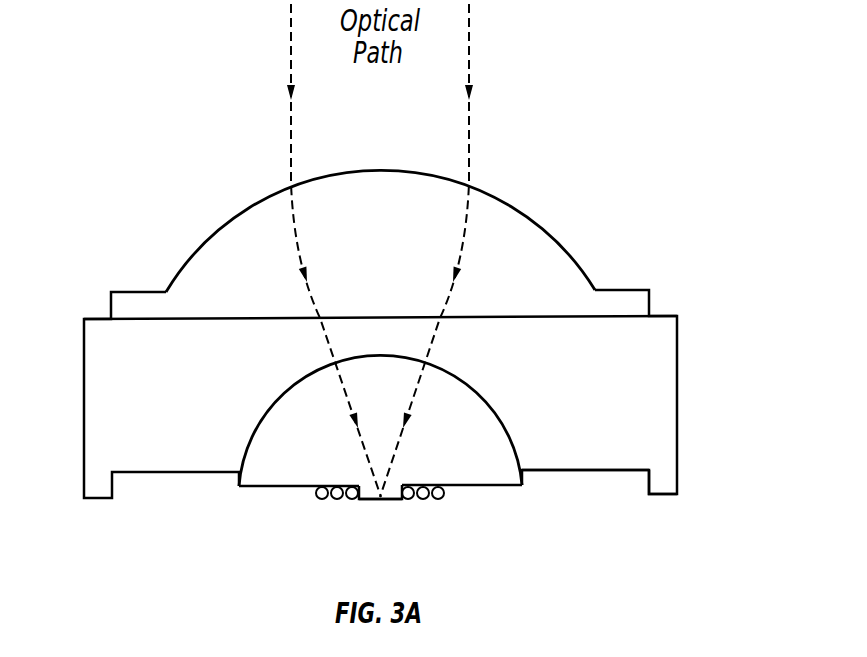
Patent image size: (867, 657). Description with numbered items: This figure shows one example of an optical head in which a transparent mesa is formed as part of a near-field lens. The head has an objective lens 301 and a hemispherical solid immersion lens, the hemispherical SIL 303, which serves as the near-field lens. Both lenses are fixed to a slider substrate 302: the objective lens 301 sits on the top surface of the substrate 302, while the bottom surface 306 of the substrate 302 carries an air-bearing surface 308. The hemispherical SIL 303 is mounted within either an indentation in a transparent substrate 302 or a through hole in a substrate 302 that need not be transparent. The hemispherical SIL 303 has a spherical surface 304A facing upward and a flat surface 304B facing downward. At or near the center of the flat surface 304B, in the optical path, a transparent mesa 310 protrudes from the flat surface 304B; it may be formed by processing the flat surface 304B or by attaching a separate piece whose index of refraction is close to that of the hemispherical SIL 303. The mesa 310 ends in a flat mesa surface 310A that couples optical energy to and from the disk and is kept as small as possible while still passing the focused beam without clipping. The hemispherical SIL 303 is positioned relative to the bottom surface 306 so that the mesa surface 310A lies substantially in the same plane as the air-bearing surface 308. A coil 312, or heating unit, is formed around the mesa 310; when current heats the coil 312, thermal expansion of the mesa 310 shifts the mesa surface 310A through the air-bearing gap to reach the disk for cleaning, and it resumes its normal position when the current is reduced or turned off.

The objective lens 301 is at (399, 257).
The slider substrate 302 is at (564, 357).
The hemispherical SIL 303 is at (382, 443).
The spherical surface 304A is at (505, 422).
The flat surface 304B is at (258, 488).
The bottom surface 306 is at (567, 472).
The air-bearing surface 308 is at (667, 496).
The transparent mesa 310 is at (381, 527).
The mesa surface 310A is at (353, 534).
The coil 312 is at (338, 500).